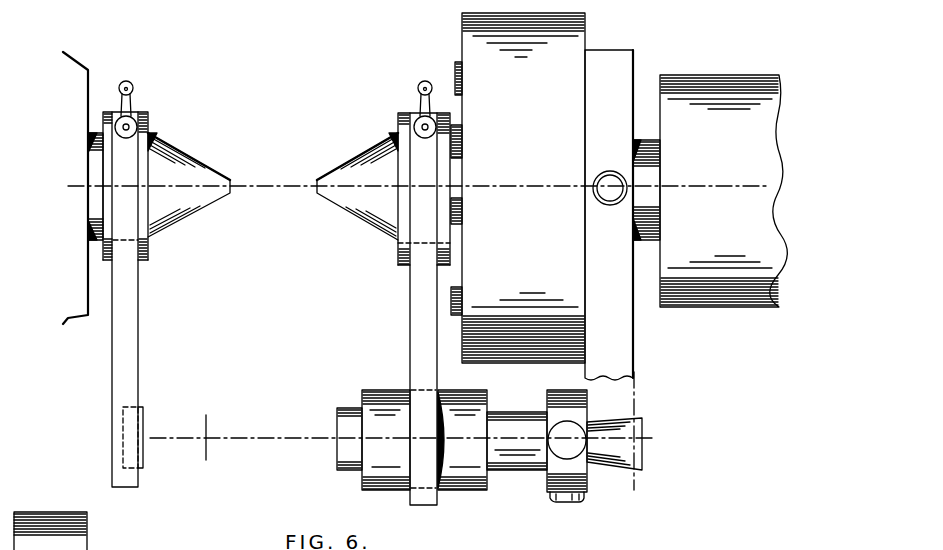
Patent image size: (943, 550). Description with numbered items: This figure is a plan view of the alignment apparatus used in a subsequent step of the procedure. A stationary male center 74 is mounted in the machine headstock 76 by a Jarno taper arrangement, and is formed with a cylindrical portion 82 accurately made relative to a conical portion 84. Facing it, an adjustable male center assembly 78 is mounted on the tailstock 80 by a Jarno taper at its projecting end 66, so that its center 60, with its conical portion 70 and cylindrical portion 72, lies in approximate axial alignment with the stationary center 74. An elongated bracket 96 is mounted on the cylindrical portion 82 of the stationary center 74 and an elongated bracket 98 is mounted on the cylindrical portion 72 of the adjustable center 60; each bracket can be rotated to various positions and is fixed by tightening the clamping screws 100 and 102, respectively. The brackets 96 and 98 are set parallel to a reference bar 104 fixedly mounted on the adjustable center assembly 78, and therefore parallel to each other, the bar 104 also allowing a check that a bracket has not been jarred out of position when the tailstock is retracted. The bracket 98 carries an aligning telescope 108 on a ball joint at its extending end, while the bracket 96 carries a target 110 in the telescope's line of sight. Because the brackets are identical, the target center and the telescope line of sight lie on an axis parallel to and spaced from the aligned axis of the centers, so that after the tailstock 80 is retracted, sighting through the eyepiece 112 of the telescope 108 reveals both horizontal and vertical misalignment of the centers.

The male center 60 is at (383, 279).
The projecting end 66 is at (645, 141).
The center cone 70 is at (368, 153).
The cylindrical portion 72 is at (457, 205).
The stationary male center 74 is at (159, 281).
The machine headstock 76 is at (78, 70).
The adjustable male center assembly 78 is at (573, 196).
The tailstock 80 is at (730, 88).
The cylindrical portion 82 is at (93, 133).
The conical portion 84 is at (188, 157).
The elongated bracket 96 is at (133, 335).
The elongated bracket 98 is at (415, 329).
The clamping screw 100 is at (134, 91).
The clamping screw 102 is at (423, 87).
The reference bar 104 is at (625, 341).
The aligning telescope 108 is at (467, 484).
The target 110 is at (144, 416).
The eyepiece 112 is at (640, 430).